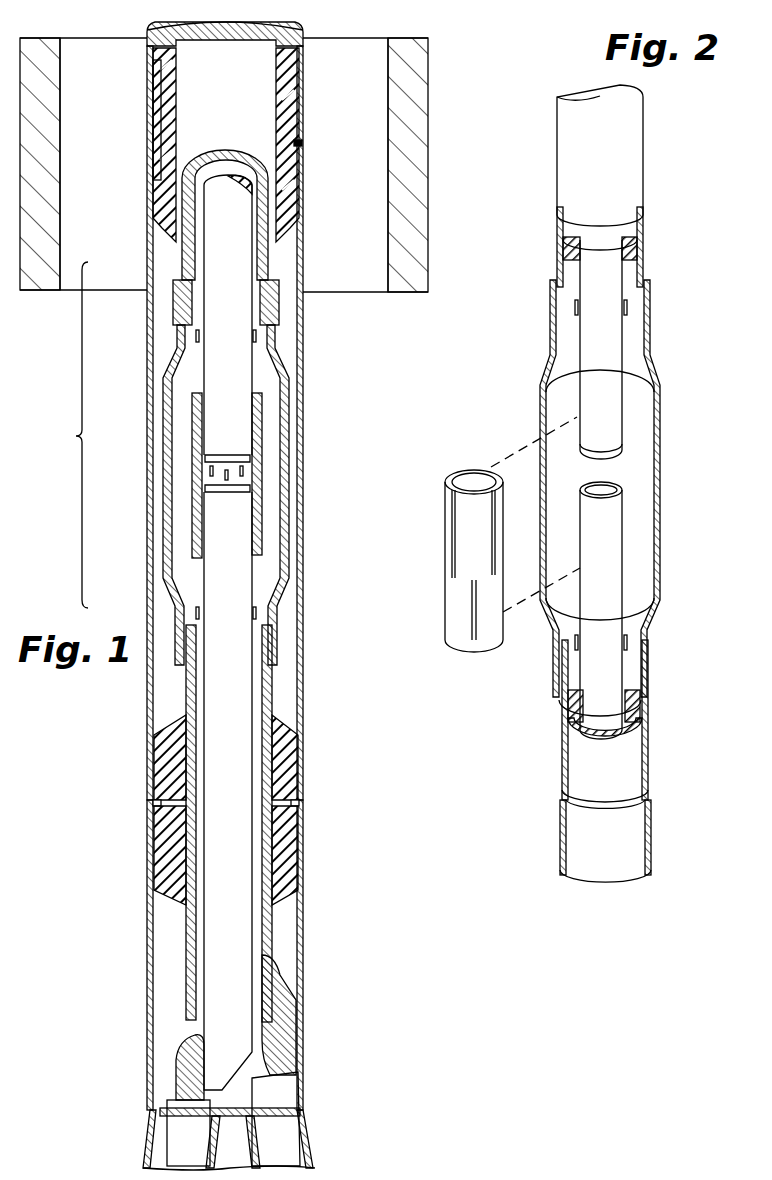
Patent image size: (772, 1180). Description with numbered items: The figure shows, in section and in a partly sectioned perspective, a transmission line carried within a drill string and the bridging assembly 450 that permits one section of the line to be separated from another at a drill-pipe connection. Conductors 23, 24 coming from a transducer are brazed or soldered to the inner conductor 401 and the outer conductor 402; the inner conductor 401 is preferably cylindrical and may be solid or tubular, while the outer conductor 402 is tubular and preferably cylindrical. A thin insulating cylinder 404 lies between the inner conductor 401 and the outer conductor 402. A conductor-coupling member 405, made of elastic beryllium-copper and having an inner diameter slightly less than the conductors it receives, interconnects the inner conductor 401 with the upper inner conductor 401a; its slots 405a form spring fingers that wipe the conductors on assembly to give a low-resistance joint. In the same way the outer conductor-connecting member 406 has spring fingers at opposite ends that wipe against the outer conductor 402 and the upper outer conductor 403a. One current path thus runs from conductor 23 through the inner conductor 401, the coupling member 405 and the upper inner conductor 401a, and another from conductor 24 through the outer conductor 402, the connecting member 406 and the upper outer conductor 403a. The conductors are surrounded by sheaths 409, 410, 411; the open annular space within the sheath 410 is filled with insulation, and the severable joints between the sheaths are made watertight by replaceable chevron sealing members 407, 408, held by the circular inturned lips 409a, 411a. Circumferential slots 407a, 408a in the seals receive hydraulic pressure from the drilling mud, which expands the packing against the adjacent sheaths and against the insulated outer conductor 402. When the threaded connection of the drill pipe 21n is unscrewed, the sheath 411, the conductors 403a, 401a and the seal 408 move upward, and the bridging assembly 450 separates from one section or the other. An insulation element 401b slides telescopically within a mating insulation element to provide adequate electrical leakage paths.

In FIG. 1, the drill pipe 21n is at (420, 210).
In FIG. 1, the conductor 23 is at (181, 1062).
In FIG. 1, the conductor 24 is at (294, 1052).
In FIG. 1, the inner conductor 401 is at (212, 523).
In FIG. 2, the inner conductor 401 is at (615, 516).
In FIG. 1, the upper inner conductor 401a is at (240, 271).
In FIG. 2, the upper inner conductor 401a is at (615, 431).
In FIG. 2, the insulation element 401b is at (627, 226).
In FIG. 1, the outer conductor 402 is at (190, 891).
In FIG. 2, the outer conductor 402 is at (648, 719).
In FIG. 1, the upper outer conductor 403a is at (263, 206).
In FIG. 2, the upper outer conductor 403a is at (641, 251).
In FIG. 2, the insulating cylinder 404 is at (580, 776).
In FIG. 1, the conductor-coupling member 405 is at (261, 426).
In FIG. 2, the conductor-coupling member 405 is at (446, 535).
In FIG. 1, the slots 405a is at (246, 481).
In FIG. 2, the slots 405a is at (492, 472).
In FIG. 1, the outer conductor-connecting member 406 is at (284, 336).
In FIG. 2, the outer conductor-connecting member 406 is at (651, 349).
In FIG. 1, the sealing member 407 is at (292, 772).
In FIG. 1, the circumferential slots 407a is at (299, 874).
In FIG. 1, the sealing member 408 is at (291, 108).
In FIG. 1, the circumferential slots 408a is at (295, 76).
In FIG. 1, the sheath 409 is at (304, 996).
In FIG. 1, the inturned lip 409a is at (300, 804).
In FIG. 1, the sheath 410 is at (149, 190).
In FIG. 1, the sheath 411 is at (166, 92).
In FIG. 1, the inturned lip 411a is at (297, 143).
In FIG. 1, the bridging assembly 450 is at (66, 437).